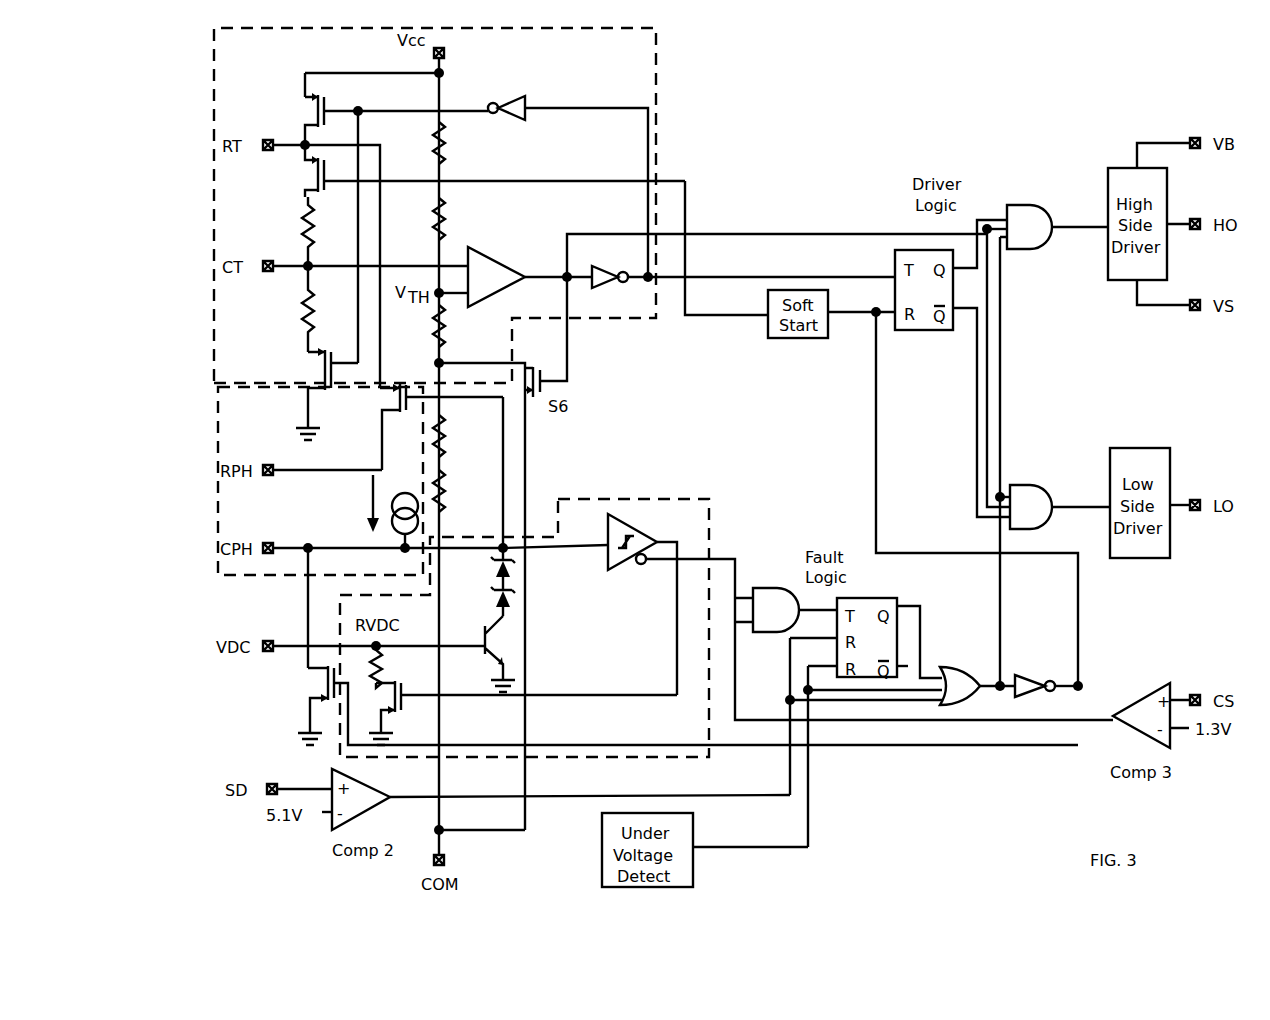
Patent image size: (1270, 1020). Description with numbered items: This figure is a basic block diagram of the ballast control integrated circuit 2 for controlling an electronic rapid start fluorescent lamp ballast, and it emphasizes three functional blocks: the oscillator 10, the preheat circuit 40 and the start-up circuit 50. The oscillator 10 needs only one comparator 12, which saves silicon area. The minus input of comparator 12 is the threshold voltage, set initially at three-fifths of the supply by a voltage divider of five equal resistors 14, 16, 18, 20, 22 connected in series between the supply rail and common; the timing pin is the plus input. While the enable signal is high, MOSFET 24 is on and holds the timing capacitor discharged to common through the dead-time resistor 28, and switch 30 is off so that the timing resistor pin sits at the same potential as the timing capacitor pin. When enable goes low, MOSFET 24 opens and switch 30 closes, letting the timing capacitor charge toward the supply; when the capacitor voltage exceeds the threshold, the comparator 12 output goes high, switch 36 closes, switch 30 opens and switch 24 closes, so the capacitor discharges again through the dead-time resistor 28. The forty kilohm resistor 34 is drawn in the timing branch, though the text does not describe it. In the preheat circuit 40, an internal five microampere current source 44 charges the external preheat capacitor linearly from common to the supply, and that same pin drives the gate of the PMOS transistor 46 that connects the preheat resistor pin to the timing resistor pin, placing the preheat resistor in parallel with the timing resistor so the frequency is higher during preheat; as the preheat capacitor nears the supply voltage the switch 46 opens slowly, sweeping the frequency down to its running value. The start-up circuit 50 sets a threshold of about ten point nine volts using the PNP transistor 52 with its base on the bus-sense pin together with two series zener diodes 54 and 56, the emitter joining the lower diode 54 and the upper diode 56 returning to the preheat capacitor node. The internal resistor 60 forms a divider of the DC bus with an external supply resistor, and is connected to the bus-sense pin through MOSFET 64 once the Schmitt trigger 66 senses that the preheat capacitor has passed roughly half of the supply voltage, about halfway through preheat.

The integrated circuit 2 is at (935, 782).
The oscillator circuit 10 is at (658, 114).
The comparator 12 is at (497, 297).
The resistor 14 is at (447, 150).
The resistor 16 is at (446, 226).
The resistor 18 is at (437, 343).
The resistor 20 is at (445, 430).
The resistor 22 is at (446, 482).
The MOSFET switch 24 is at (323, 357).
The dead-time resistor 28 is at (314, 298).
The switch 30 is at (320, 172).
The resistor 40K 34 is at (314, 228).
The switch 36 is at (325, 104).
The preheat circuit 40 is at (215, 532).
The current source 44 is at (371, 511).
The PMOS transistor 46 is at (383, 412).
The start-up circuit 50 is at (578, 497).
The PNP transistor 52 is at (483, 649).
The zener diode 54 is at (512, 596).
The zener diode 56 is at (512, 568).
The internal resistor 60 is at (378, 686).
The MOSFET 64 is at (397, 708).
The Schmitt trigger 66 is at (618, 567).